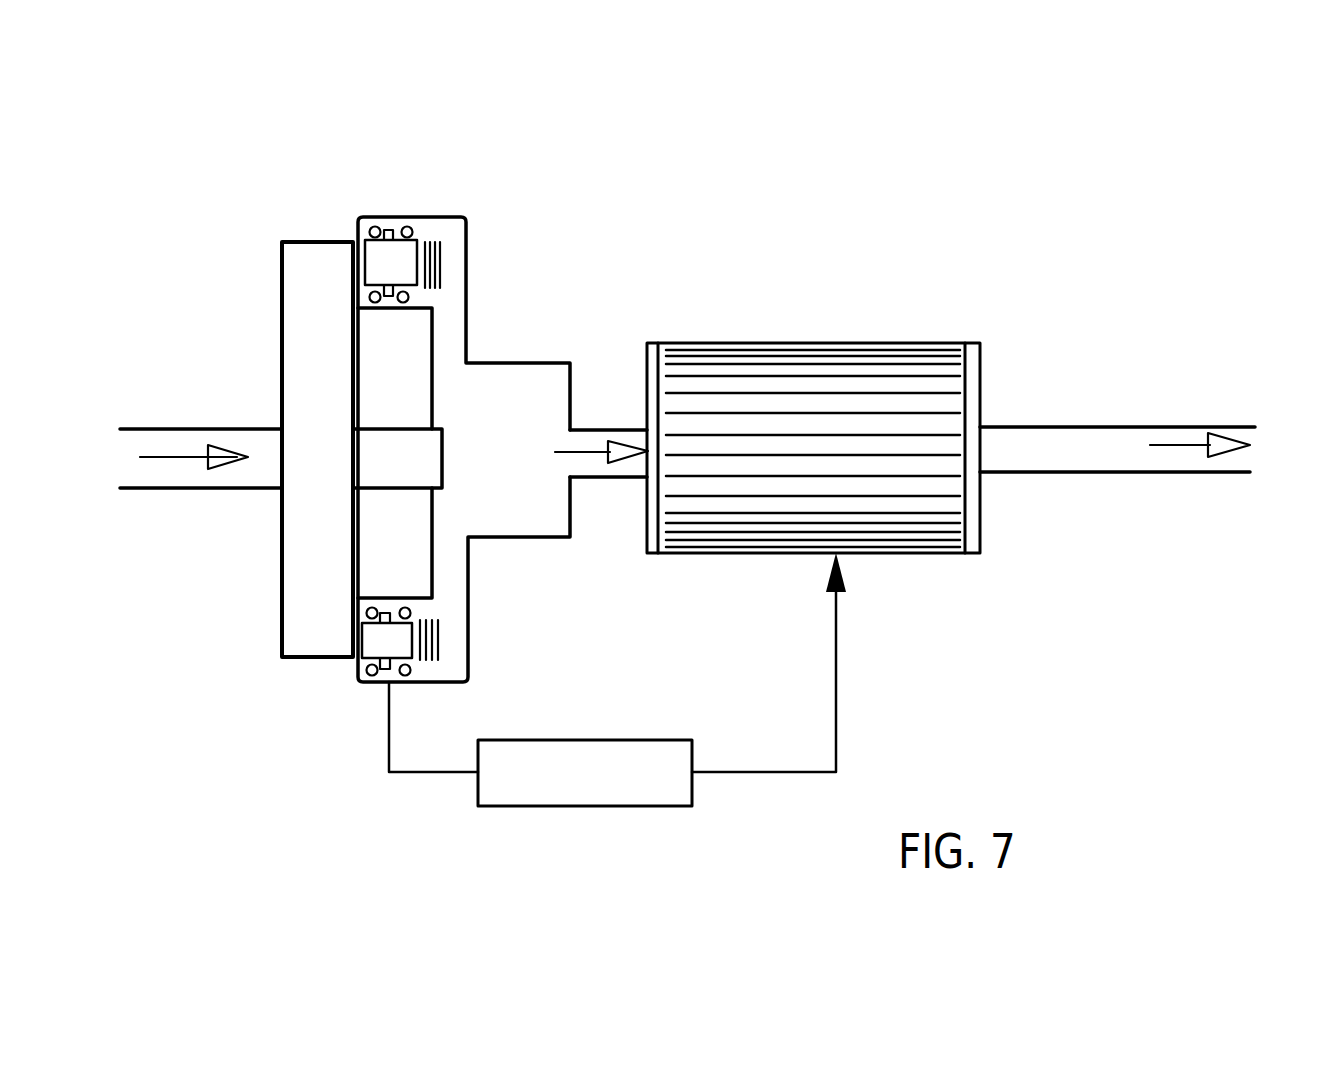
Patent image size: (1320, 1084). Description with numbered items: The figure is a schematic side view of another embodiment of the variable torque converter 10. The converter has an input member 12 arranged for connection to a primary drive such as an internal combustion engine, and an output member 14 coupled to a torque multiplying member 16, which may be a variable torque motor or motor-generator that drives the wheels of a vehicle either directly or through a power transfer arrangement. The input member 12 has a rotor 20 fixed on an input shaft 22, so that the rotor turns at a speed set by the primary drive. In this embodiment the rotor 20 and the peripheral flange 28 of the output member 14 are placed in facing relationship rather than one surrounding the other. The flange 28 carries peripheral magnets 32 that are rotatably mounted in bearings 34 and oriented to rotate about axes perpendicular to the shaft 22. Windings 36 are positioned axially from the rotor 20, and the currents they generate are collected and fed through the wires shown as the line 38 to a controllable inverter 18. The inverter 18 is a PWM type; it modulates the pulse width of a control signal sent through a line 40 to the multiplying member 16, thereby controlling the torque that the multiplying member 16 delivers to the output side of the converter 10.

The variable torque converter 10 is at (1060, 218).
The input member 12 is at (222, 580).
The output member 14 is at (586, 320).
The torque multiplying member 16 is at (964, 623).
The controllable inverter 18 is at (613, 813).
The rotor 20 is at (280, 303).
The input shaft 22 is at (178, 427).
The peripheral flange 28 is at (353, 672).
The peripheral magnets 32 is at (418, 245).
The bearings 34 is at (377, 227).
The winding 36 is at (440, 257).
The line 38 is at (385, 745).
The line 40 is at (837, 708).